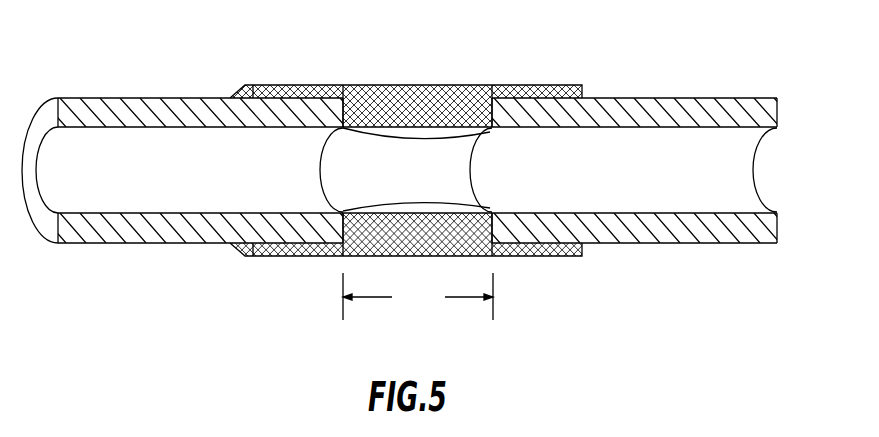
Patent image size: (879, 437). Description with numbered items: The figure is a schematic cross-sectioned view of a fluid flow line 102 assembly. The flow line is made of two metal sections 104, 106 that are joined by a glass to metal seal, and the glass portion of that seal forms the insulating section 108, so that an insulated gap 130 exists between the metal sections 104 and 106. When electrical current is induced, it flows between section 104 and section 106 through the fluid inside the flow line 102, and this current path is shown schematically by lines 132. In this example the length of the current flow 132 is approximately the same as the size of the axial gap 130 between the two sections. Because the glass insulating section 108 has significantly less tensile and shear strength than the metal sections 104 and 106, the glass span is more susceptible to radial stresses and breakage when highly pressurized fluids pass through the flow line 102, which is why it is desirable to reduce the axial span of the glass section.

The flow line 102 is at (645, 179).
The metal section 104 is at (749, 98).
The metal section 106 is at (131, 98).
The insulating section 108 is at (462, 85).
The insulated gap 130 is at (418, 296).
The current flow lines 132 is at (345, 130).